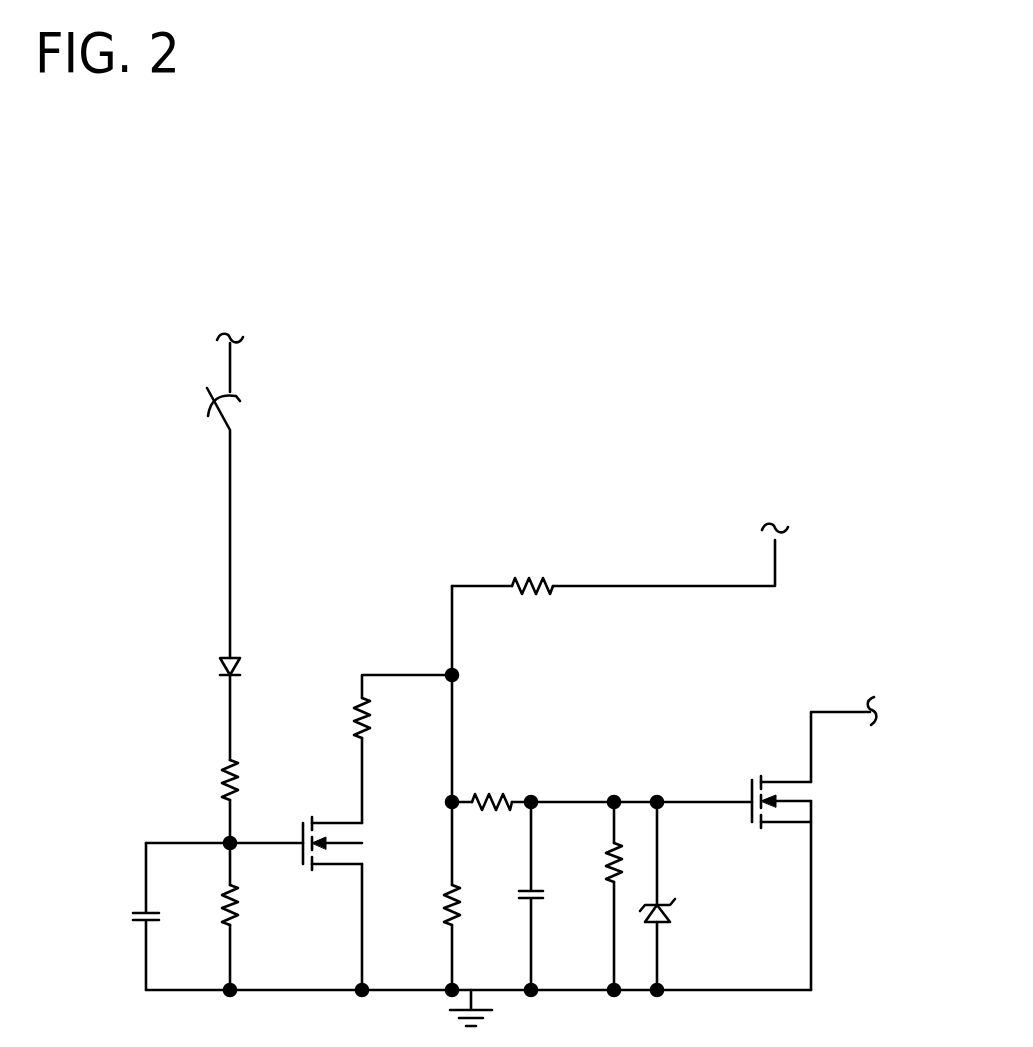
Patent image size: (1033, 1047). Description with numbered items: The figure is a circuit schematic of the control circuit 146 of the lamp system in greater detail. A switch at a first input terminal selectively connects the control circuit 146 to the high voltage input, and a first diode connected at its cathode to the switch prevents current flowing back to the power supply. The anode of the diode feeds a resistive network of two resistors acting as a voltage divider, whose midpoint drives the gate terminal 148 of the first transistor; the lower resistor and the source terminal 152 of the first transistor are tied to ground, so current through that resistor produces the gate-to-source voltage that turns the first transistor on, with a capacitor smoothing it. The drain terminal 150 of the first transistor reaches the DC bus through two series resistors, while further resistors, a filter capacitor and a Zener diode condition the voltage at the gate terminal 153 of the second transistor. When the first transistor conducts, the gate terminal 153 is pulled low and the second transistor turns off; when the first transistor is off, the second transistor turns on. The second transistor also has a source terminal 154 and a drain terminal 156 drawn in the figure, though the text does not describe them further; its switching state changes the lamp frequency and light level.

The control circuit 146 is at (742, 266).
The gate terminal of the first transistor 148 is at (277, 838).
The drain terminal of the first transistor 150 is at (363, 818).
The source terminal of the first transistor 152 is at (362, 880).
The gate terminal of the second transistor 153 is at (737, 797).
The source of second transistor M2 154 is at (811, 842).
The drain of second transistor M2 156 is at (832, 712).